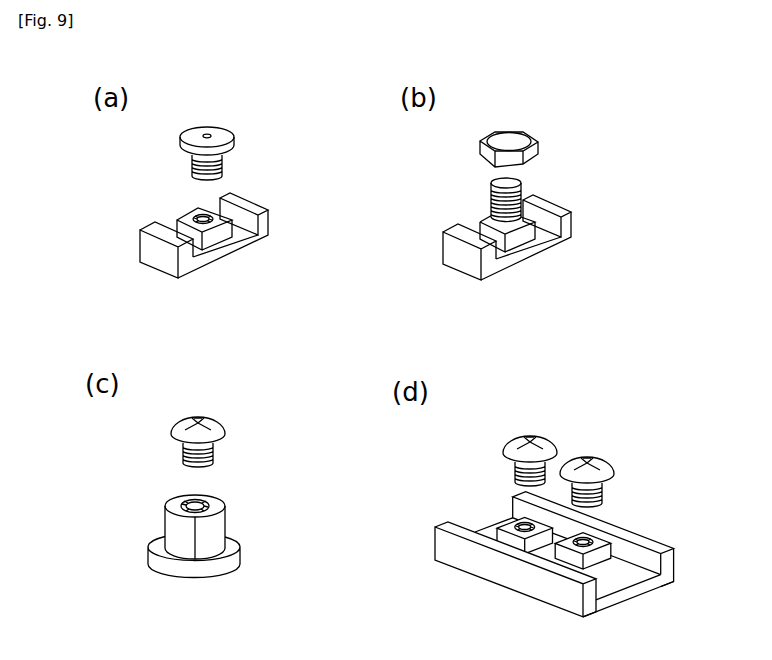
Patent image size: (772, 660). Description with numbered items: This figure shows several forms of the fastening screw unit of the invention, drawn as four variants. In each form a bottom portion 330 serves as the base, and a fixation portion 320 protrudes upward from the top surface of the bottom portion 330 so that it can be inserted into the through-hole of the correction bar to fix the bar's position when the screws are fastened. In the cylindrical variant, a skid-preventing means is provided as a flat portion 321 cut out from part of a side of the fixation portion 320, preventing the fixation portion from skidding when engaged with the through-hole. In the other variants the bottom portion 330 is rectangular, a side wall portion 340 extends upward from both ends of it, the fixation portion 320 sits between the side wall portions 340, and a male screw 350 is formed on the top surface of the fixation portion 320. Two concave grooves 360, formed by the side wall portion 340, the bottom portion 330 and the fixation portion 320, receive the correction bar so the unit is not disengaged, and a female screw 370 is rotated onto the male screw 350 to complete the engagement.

The fixation portion 320 is at (223, 237).
The flat portion 321 is at (182, 543).
The bottom portion 330 is at (245, 247).
The side wall portion 340 is at (147, 250).
The screw 350 is at (198, 208).
The concave groove 360 is at (160, 219).
The female screw 370 is at (218, 130).